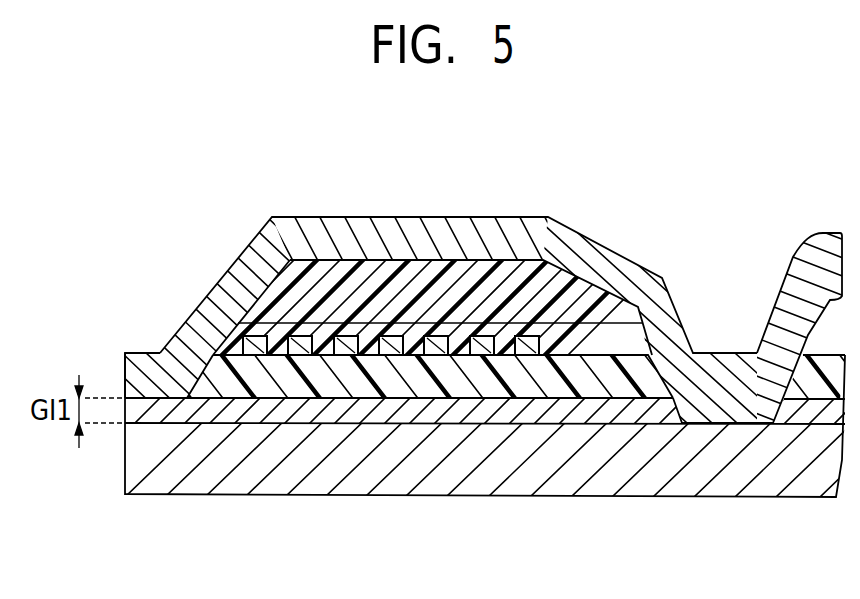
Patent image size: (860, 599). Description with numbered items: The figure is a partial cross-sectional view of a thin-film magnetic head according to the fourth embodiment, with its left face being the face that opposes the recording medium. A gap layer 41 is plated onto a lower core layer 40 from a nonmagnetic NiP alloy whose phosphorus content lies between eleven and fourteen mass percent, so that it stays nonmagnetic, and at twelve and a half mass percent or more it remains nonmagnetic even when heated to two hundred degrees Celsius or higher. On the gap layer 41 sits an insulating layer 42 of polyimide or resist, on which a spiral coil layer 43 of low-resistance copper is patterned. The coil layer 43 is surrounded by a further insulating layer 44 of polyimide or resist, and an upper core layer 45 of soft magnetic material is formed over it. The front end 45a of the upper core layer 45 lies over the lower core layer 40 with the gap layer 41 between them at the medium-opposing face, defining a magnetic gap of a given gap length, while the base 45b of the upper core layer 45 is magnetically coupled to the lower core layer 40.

The lower core layer 40 is at (187, 448).
The gap layer 41 is at (383, 408).
The insulating layer 42 is at (540, 378).
The coil layer 43 is at (397, 312).
The insulating layer 44 is at (475, 278).
The upper core layer 45 is at (600, 270).
The front end 45a is at (152, 385).
The base 45b is at (733, 380).